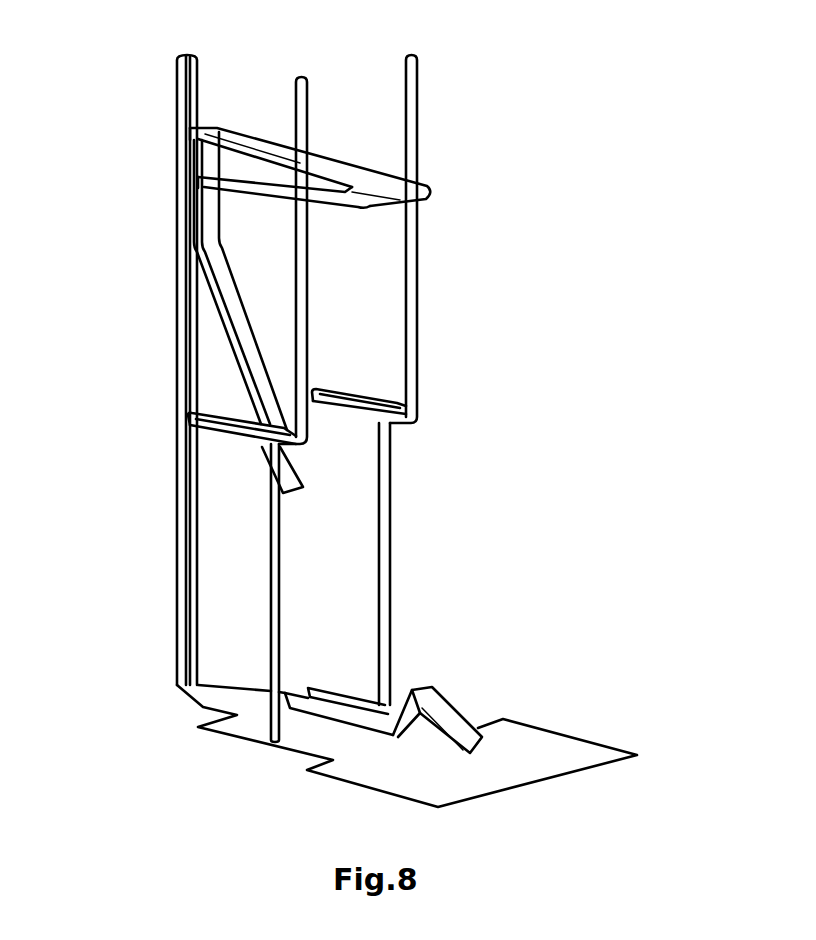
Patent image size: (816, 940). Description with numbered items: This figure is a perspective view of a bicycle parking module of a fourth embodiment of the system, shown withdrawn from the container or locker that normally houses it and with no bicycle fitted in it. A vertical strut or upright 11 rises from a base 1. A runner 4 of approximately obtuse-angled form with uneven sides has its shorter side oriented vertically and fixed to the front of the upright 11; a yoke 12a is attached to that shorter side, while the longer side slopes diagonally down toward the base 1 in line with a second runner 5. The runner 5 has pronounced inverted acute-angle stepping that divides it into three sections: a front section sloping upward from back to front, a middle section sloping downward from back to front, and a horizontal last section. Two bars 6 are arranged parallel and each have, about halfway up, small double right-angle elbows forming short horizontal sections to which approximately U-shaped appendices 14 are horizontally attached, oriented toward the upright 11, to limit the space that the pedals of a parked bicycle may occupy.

The base 1 is at (550, 743).
The runner 4 is at (250, 388).
The runner 5 is at (358, 718).
The bars 6 is at (303, 88).
The strut or upright 11 is at (174, 349).
The yoke 12a is at (236, 148).
The U-shaped appendices 14 is at (230, 432).